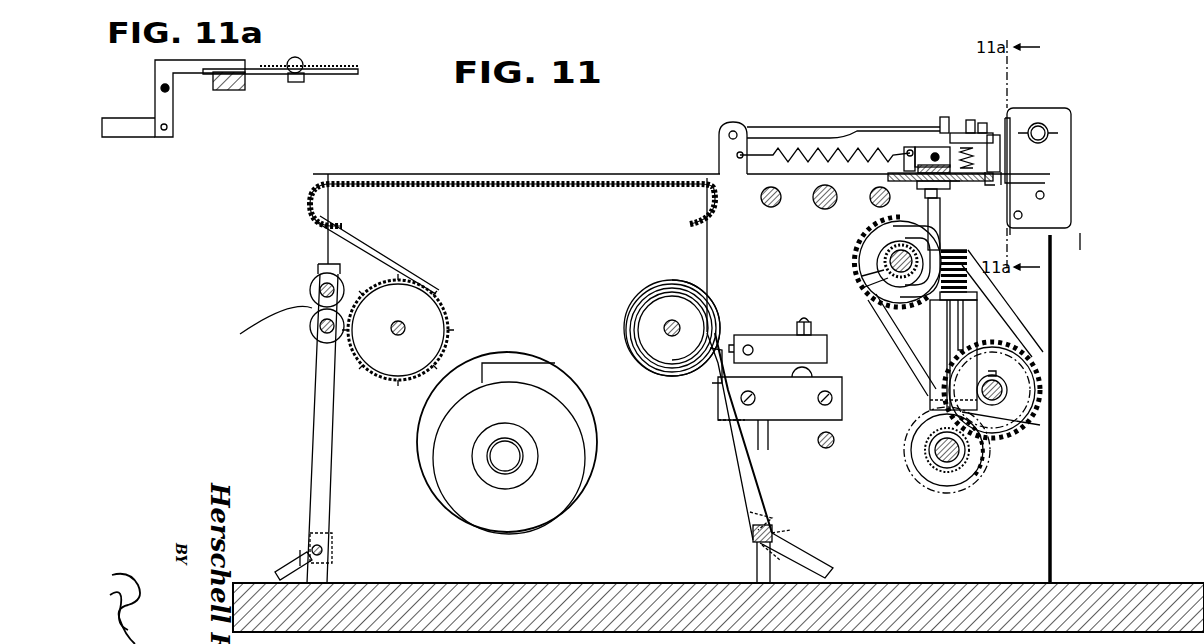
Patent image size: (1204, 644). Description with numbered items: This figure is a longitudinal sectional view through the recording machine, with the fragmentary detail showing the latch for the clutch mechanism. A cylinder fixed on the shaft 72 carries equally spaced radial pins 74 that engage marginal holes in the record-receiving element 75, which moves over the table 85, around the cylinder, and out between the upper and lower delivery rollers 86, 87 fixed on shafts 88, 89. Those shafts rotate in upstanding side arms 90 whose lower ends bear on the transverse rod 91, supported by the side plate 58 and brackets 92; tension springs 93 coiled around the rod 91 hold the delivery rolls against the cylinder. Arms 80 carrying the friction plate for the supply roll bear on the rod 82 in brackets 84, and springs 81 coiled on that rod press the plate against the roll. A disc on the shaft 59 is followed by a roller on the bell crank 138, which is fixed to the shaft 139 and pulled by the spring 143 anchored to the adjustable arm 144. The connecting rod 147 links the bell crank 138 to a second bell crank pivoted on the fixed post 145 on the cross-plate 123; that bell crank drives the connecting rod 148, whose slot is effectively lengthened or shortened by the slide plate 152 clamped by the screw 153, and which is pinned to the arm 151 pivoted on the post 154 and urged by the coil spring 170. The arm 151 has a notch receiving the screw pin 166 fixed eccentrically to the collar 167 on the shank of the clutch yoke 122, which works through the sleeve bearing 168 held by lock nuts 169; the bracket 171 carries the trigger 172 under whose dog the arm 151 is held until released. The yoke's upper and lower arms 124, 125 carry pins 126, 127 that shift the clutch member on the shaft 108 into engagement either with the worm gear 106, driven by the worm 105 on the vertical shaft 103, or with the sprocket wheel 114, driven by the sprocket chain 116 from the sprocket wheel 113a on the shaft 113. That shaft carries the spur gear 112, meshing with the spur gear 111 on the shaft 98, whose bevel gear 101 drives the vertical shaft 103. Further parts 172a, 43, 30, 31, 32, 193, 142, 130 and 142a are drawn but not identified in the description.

In FIG. 11A, the trigger 172 is at (176, 110).
In FIG. 11, the trigger 172 is at (1012, 118).
In FIG. 11A, the bracket extension 172a is at (135, 137).
In FIG. 11A, the arm 151 is at (222, 90).
In FIG. 11, the arm 151 is at (1001, 120).
In FIG. 11A, the connecting rod 148 is at (335, 74).
In FIG. 11A, the slide plate 152 is at (315, 66).
In FIG. 11A, the clamp screw 153 is at (300, 57).
In FIG. 11, the side plate 58 is at (538, 174).
In FIG. 11, the table 85 is at (548, 190).
In FIG. 11, the record-receiving element 75 is at (370, 250).
In FIG. 11, the pins 74 is at (432, 290).
In FIG. 11, the shaft 72 is at (400, 336).
In FIG. 11, the side arms 90 is at (334, 438).
In FIG. 11, the upper delivery roller 86 is at (316, 280).
In FIG. 11, the upper shaft 88 is at (320, 292).
In FIG. 11, the lower delivery roller 87 is at (312, 328).
In FIG. 11, the lower shaft 89 is at (318, 336).
In FIG. 11, the drum 43 is at (548, 505).
In FIG. 11, the transverse rod 91 is at (325, 546).
In FIG. 11, the brackets 92 is at (284, 558).
In FIG. 11, the tension springs 93 is at (302, 548).
In FIG. 11, the shaft 139 is at (748, 345).
In FIG. 11, the plate 30 is at (778, 335).
In FIG. 11, the screw 31 is at (800, 312).
In FIG. 11, the housing 32 is at (800, 415).
In FIG. 11, the shaft 59 is at (828, 448).
In FIG. 11, the arms 80 is at (762, 482).
In FIG. 11, the transverse rod 82 is at (772, 528).
In FIG. 11, the spring 81 is at (782, 540).
In FIG. 11, the bracket 84 is at (818, 555).
In FIG. 11, the bell crank 138 is at (724, 122).
In FIG. 11, the connecting rod 147 is at (803, 127).
In FIG. 11, the pull spring 143 is at (833, 131).
In FIG. 11, the adjustable arm 144 is at (898, 145).
In FIG. 11, the collar 167 is at (930, 145).
In FIG. 11, the screw pin 166 is at (944, 117).
In FIG. 11, the fixed post 145 is at (970, 120).
In FIG. 11, the post 154 is at (984, 123).
In FIG. 11, the plate 193 is at (1071, 158).
In FIG. 11, the cross-plate 123 is at (888, 177).
In FIG. 11, the sleeve bearing 168 is at (950, 192).
In FIG. 11, the lock nuts 169 is at (960, 183).
In FIG. 11, the coil spring 170 is at (990, 185).
In FIG. 11, the bracket 171 is at (1001, 185).
In FIG. 11, the clutch yoke 122 is at (940, 234).
In FIG. 11, the pin 142 is at (775, 207).
In FIG. 11, the pin 130 is at (822, 209).
In FIG. 11, the pin 142a is at (876, 207).
In FIG. 11, the worm gear 106 is at (866, 236).
In FIG. 11, the upper arm 124 is at (908, 226).
In FIG. 11, the sprocket wheel 114 is at (878, 255).
In FIG. 11, the pin 126 is at (885, 262).
In FIG. 11, the transverse shaft 108 is at (852, 277).
In FIG. 11, the pin 127 is at (854, 288).
In FIG. 11, the lower arm 125 is at (868, 306).
In FIG. 11, the worm 105 is at (968, 254).
In FIG. 11, the vertical shaft 103 is at (930, 335).
In FIG. 11, the sprocket chain 116 is at (1005, 318).
In FIG. 11, the transverse shaft 113 is at (1002, 392).
In FIG. 11, the sprocket wheel 113a is at (1030, 382).
In FIG. 11, the spur gear 112 is at (1024, 422).
In FIG. 11, the spur gear 111 is at (980, 470).
In FIG. 11, the transverse shaft 98 is at (942, 462).
In FIG. 11, the bevel gear 101 is at (955, 465).